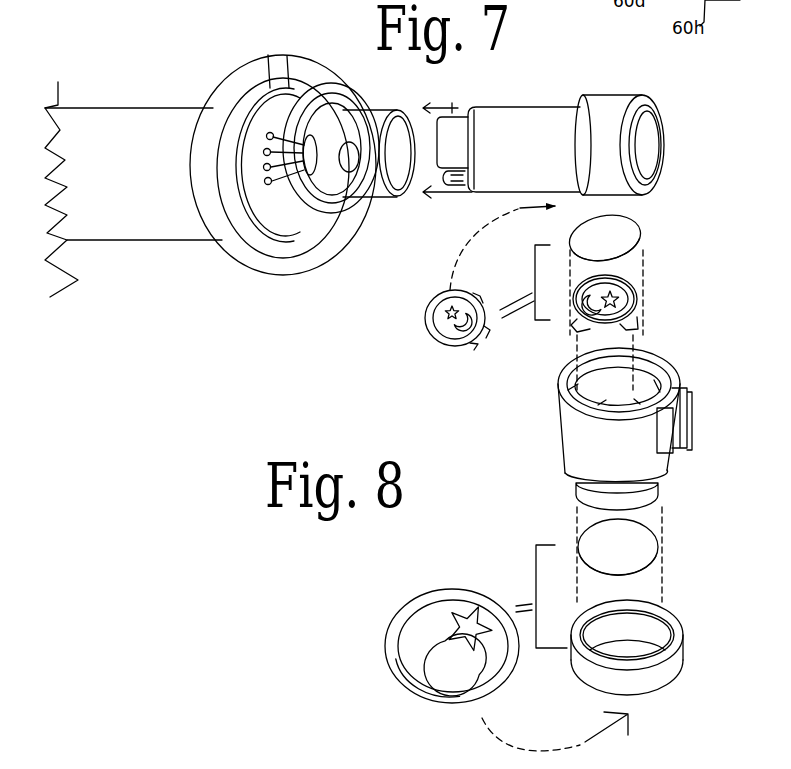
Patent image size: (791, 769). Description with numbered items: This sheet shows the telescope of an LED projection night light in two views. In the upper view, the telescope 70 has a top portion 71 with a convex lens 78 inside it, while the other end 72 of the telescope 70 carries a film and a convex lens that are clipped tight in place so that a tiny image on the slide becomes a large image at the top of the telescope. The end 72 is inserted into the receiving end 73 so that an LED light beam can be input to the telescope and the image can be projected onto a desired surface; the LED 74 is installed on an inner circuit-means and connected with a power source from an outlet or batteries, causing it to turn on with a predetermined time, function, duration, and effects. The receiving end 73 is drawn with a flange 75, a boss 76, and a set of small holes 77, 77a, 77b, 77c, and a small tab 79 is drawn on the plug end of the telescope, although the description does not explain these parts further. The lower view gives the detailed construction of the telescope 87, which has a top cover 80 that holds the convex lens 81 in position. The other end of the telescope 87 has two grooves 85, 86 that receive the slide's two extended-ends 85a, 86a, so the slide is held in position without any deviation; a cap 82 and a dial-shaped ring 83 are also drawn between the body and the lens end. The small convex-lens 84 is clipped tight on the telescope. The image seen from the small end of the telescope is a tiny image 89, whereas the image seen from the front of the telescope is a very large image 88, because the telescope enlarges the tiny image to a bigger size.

In FIG. 7, the telescope 70 is at (493, 104).
In FIG. 7, the top portion 71 is at (640, 129).
In FIG. 7, the other end 72 is at (449, 129).
In FIG. 7, the receiving end 73 is at (394, 132).
In FIG. 7, the LED 74 is at (350, 156).
In FIG. 7, the flange 75 is at (247, 126).
In FIG. 7, the boss 76 is at (293, 130).
In FIG. 7, the holes 77 is at (218, 176).
In FIG. 7, the first hole 77a is at (264, 156).
In FIG. 7, the second hole 77b is at (264, 171).
In FIG. 7, the third hole 77c is at (268, 193).
In FIG. 7, the convex lens 78 is at (643, 143).
In FIG. 7, the tab 79 is at (456, 168).
In FIG. 8, the top cover 80 is at (679, 640).
In FIG. 8, the convex lens 81 is at (650, 553).
In FIG. 8, the cap 82 is at (581, 490).
In FIG. 8, the dial ring 83 is at (625, 308).
In FIG. 8, the small convex-lens 84 is at (638, 236).
In FIG. 8, the groove 85 is at (603, 415).
In FIG. 8, the extended-end 85a is at (575, 330).
In FIG. 8, the groove 86 is at (656, 380).
In FIG. 8, the extended-end 86a is at (650, 323).
In FIG. 8, the telescope 87 is at (690, 400).
In FIG. 8, the very large image 88 is at (446, 611).
In FIG. 8, the tiny image 89 is at (447, 354).